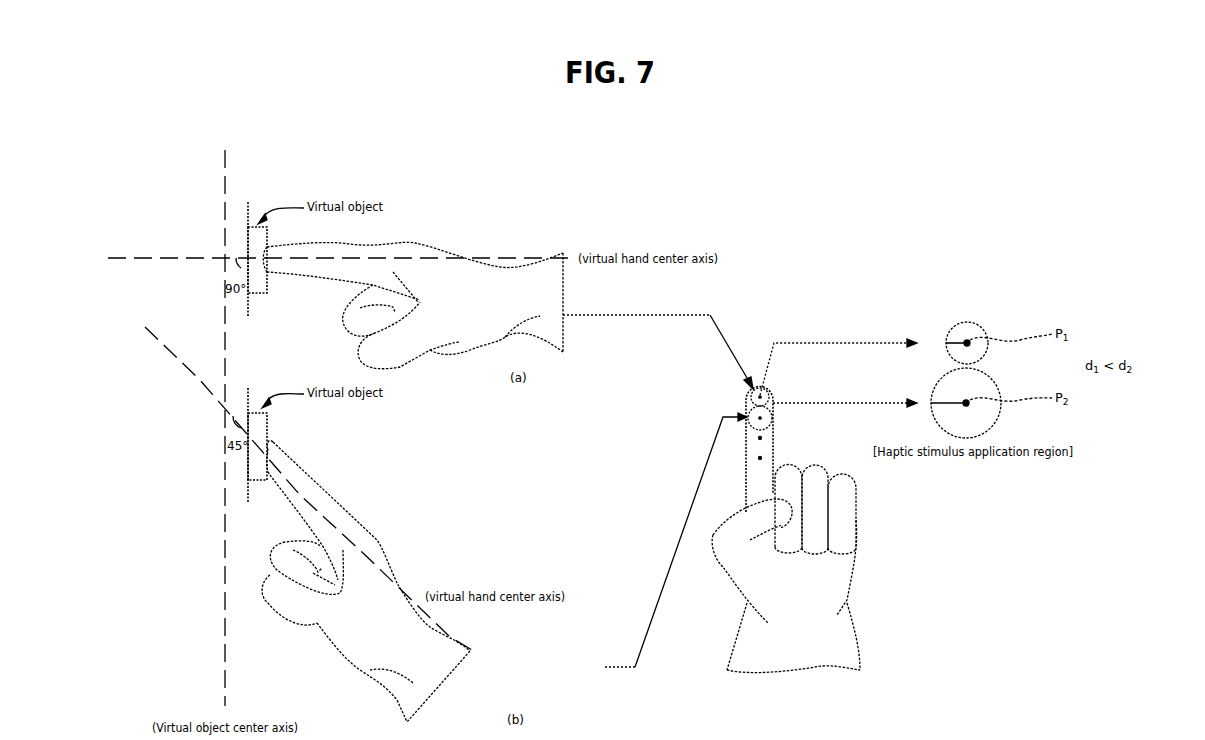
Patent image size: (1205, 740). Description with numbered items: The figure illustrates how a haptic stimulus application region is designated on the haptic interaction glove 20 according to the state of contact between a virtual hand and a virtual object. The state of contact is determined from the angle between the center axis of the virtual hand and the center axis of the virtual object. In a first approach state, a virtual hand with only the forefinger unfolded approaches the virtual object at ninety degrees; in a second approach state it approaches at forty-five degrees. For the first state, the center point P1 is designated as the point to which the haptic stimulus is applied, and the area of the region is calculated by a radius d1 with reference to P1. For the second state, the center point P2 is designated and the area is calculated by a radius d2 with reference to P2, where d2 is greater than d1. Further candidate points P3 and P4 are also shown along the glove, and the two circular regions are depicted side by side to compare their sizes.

The haptic interaction glove 20 is at (857, 575).
The center point P1 is at (764, 395).
The center point P2 is at (768, 418).
The third haptic stimulus point on controller P3 is at (763, 438).
The fourth haptic stimulus point on controller P4 is at (763, 458).
The radius d1 is at (946, 334).
The radius d2 is at (966, 403).